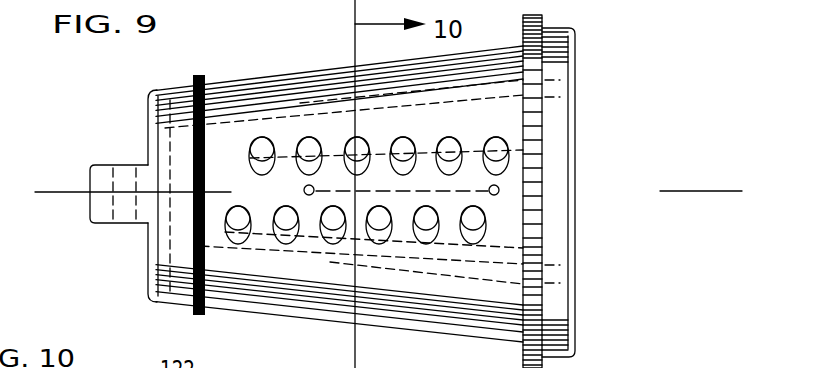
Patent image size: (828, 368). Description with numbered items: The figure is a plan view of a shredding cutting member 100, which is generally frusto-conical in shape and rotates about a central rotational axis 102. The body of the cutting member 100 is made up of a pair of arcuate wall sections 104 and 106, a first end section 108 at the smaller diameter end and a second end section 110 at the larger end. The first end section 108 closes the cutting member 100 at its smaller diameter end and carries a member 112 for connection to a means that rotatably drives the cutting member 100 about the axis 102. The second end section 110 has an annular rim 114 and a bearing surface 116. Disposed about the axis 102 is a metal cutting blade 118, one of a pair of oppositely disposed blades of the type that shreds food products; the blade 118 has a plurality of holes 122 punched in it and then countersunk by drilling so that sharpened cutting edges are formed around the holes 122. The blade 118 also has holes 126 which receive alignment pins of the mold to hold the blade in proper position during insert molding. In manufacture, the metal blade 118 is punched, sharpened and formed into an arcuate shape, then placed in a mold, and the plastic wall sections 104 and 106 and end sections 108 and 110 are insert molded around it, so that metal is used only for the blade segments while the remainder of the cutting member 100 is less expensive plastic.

The cutting member 100 is at (612, 35).
The central rotational axis 102 is at (680, 183).
The arcuate wall section 104 is at (300, 305).
The arcuate wall section 106 is at (303, 95).
The first end section 108 is at (173, 88).
The second end section 110 is at (558, 28).
The connection member 112 is at (103, 163).
The annular rim 114 is at (532, 17).
The bearing surface 116 is at (556, 247).
The cutting blade 118 is at (412, 110).
The holes 122 is at (497, 167).
The alignment holes 126 is at (303, 190).